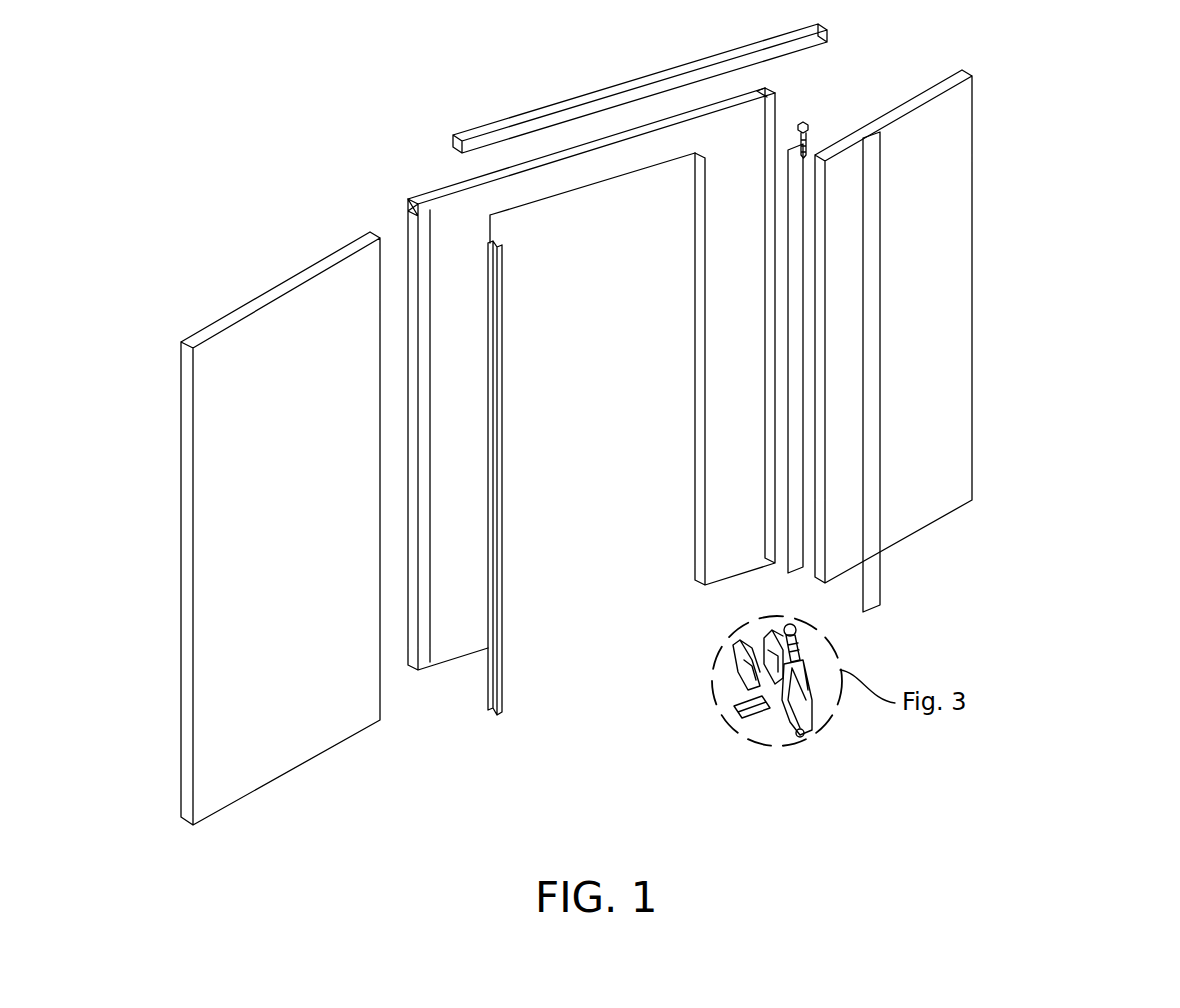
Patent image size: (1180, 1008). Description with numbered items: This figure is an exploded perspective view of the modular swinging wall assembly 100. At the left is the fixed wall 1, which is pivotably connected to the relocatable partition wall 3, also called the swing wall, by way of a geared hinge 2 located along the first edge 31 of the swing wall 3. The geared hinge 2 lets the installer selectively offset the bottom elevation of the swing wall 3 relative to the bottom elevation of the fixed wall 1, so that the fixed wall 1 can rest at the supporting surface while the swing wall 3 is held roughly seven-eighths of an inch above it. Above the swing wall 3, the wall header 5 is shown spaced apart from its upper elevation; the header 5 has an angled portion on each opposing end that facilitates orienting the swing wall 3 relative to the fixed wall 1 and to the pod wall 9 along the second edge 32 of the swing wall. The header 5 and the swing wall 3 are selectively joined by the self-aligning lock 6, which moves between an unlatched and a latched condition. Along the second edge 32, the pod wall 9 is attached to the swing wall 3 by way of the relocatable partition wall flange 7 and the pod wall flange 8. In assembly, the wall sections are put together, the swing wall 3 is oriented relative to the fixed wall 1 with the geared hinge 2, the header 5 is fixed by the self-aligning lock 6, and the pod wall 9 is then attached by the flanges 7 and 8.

The modular swinging wall assembly 100 is at (1045, 68).
The fixed wall 1 is at (293, 733).
The geared hinge 2 is at (502, 700).
The relocatable partition wall 3 is at (569, 366).
The first edge 31 is at (408, 242).
The second edge 32 is at (780, 123).
The wall header 5 is at (647, 77).
The self-aligning lock 6 is at (805, 122).
The relocatable partition wall flange 7 is at (880, 588).
The pod wall flange 8 is at (797, 270).
The pod wall 9 is at (960, 428).